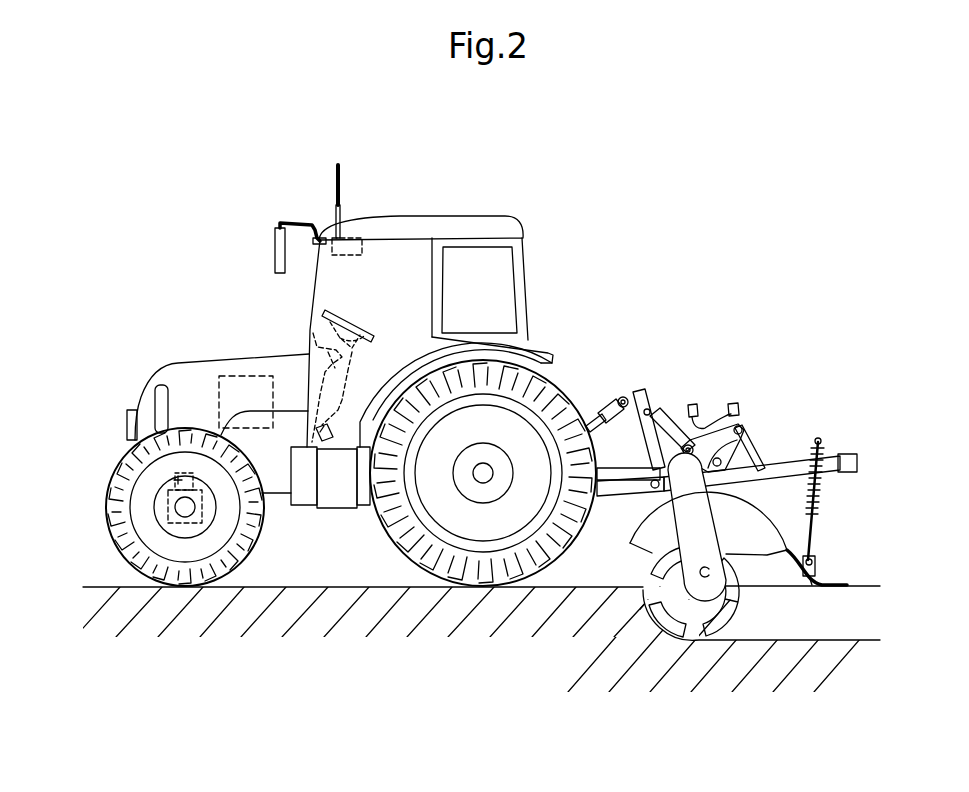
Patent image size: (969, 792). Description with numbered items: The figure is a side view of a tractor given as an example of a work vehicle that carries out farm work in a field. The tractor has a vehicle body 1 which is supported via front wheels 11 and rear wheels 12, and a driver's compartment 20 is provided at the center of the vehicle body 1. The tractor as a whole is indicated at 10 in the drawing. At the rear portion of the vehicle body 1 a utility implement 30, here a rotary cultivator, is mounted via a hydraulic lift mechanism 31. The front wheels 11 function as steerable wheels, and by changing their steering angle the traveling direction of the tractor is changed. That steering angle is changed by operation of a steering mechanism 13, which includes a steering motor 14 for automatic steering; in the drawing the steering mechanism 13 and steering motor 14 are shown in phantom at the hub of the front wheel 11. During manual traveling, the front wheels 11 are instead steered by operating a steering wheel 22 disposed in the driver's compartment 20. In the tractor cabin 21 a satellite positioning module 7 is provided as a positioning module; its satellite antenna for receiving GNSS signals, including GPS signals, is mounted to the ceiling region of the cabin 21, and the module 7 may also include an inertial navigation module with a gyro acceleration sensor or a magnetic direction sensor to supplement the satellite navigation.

The vehicle body 1 is at (350, 401).
The satellite positioning module 7 is at (337, 192).
The vehicle body 10 is at (365, 525).
The front wheels 11 is at (152, 555).
The rear wheels 12 is at (493, 572).
The steering mechanism 13 is at (170, 507).
The steering motor 14 is at (160, 481).
The driver's compartment 20 is at (446, 283).
The tractor cabin 21 is at (520, 230).
The steering wheel 22 is at (342, 323).
The utility implement 30 is at (705, 623).
The hydraulic lift mechanism 31 is at (655, 388).